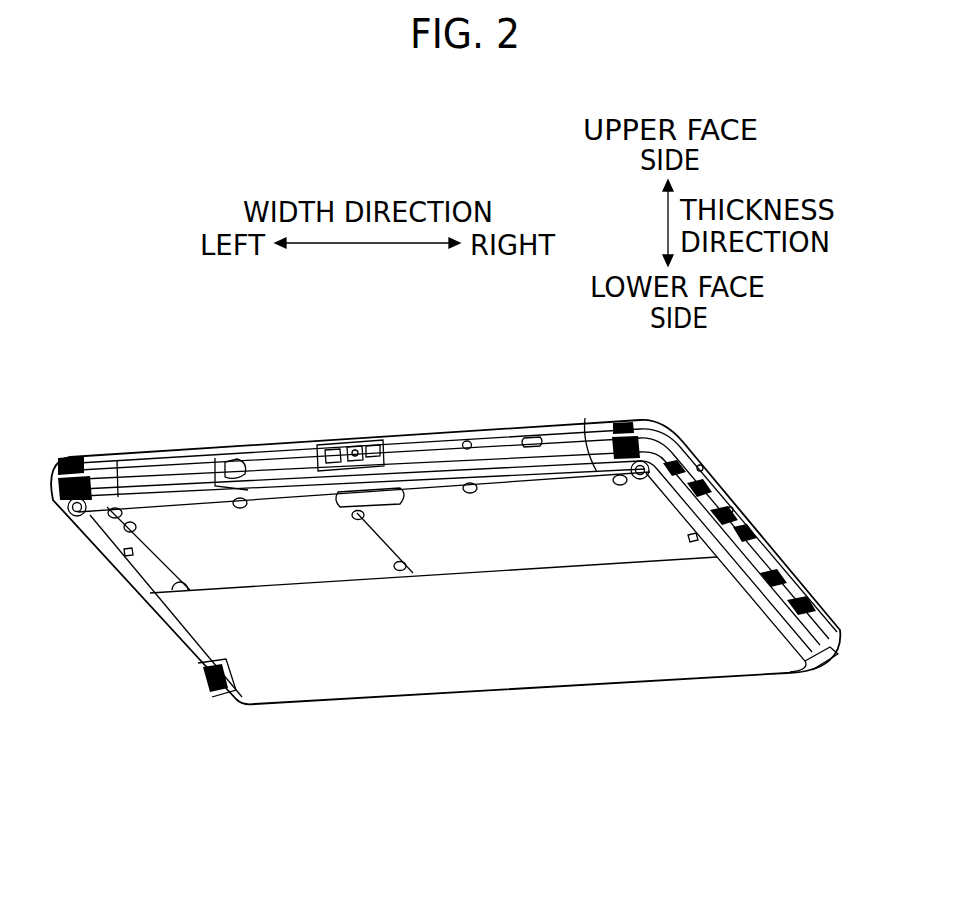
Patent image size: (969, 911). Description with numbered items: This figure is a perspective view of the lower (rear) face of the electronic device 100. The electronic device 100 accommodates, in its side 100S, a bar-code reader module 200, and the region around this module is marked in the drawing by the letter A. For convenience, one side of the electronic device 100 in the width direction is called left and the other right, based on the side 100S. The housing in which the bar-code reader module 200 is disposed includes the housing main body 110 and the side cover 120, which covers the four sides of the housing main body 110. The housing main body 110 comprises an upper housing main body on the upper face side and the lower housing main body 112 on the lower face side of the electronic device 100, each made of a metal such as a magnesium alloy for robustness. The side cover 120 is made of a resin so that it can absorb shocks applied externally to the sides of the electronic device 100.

The electronic device 100 is at (499, 396).
The side 100S is at (560, 440).
The housing main body 110 is at (277, 483).
The lower housing main body 112 is at (508, 663).
The side cover 120 is at (157, 466).
The bar-code reader module 200 is at (282, 459).
The region A is at (260, 411).